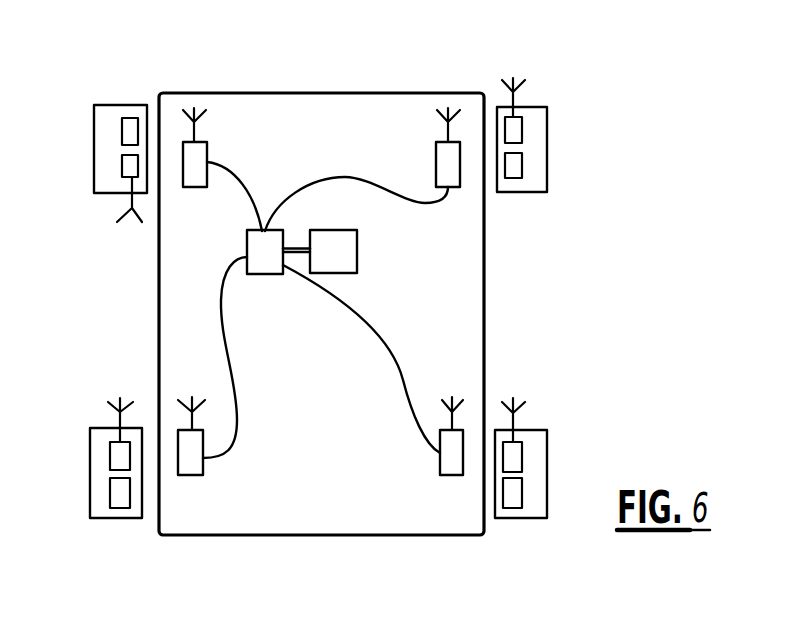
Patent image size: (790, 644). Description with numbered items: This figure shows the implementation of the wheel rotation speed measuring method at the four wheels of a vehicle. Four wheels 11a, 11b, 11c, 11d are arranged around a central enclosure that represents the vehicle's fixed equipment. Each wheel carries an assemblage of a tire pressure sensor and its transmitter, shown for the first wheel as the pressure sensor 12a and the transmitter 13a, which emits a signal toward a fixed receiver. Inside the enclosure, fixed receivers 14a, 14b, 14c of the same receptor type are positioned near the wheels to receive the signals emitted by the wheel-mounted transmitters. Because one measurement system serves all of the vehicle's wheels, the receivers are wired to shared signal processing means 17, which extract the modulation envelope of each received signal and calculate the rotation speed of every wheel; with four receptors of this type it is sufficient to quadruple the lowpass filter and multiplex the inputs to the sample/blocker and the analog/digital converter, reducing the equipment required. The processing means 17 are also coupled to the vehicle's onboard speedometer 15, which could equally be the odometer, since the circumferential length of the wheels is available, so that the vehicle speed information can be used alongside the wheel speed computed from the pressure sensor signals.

The wheel 11a is at (123, 105).
The wheel 11b is at (547, 120).
The wheel 11c is at (547, 493).
The wheel 11d is at (100, 518).
The pressure sensor 12a is at (122, 131).
The transmitter 13a is at (122, 165).
The fixed receiver 14a is at (207, 147).
The fixed receiver 14b is at (436, 153).
The fixed receiver 14c is at (440, 465).
The onboard speedometer 15 is at (357, 247).
The processing means 17 is at (257, 274).